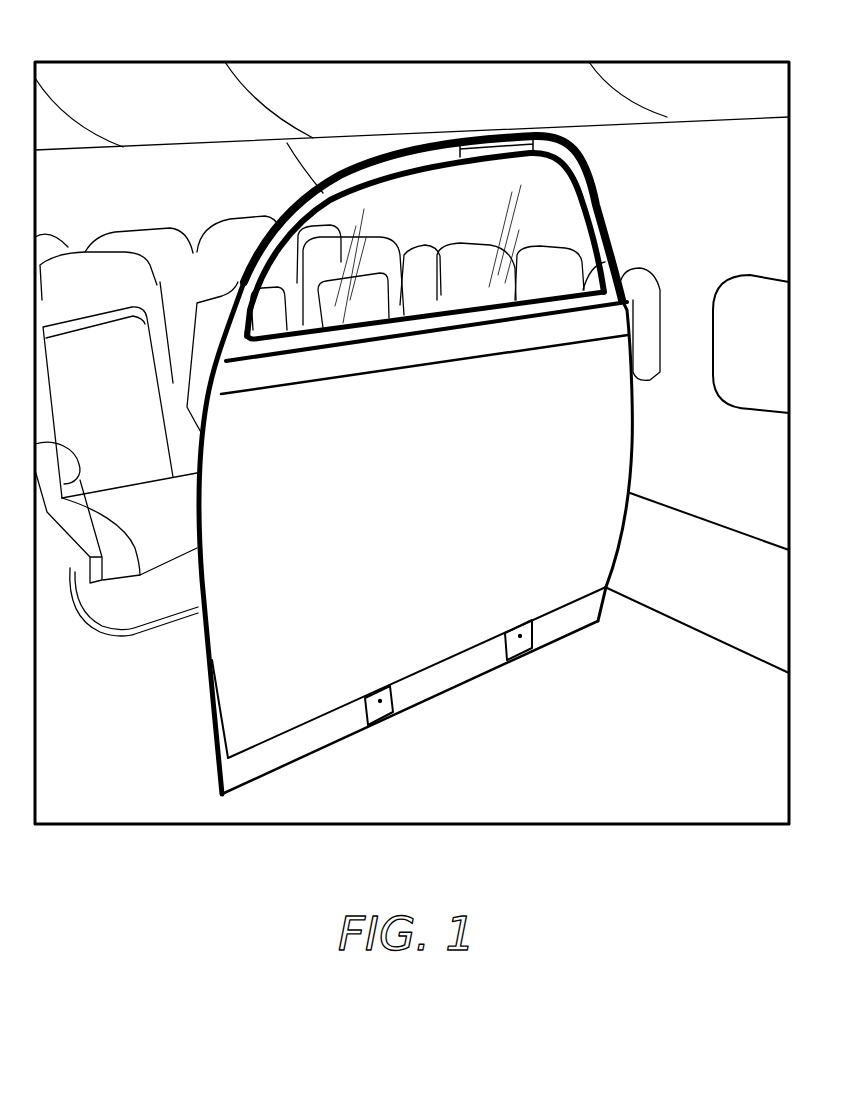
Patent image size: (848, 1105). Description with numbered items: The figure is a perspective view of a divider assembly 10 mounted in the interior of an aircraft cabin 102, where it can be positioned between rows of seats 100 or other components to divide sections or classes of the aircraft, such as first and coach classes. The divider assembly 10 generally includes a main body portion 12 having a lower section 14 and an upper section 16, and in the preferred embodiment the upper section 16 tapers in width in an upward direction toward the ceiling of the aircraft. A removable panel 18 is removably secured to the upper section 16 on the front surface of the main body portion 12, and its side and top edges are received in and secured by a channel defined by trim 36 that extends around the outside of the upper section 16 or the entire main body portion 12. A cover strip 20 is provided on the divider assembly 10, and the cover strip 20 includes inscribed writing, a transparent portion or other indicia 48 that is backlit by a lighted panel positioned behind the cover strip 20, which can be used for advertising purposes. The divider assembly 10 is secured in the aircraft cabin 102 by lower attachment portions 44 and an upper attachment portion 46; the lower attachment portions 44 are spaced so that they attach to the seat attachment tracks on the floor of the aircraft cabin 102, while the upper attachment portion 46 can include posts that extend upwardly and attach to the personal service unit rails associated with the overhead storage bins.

The divider assembly 10 is at (459, 402).
The main body portion 12 is at (593, 470).
The lower section 14 is at (438, 532).
The upper section 16 is at (612, 296).
The removable panel 18 is at (584, 240).
The cover strip 20 is at (547, 332).
The trim 36 is at (379, 148).
The lower attachment portions 44 is at (378, 708).
The upper attachment portion 46 is at (497, 150).
The indicia 48 is at (275, 396).
The seats 100 is at (78, 268).
The aircraft cabin 102 is at (137, 769).